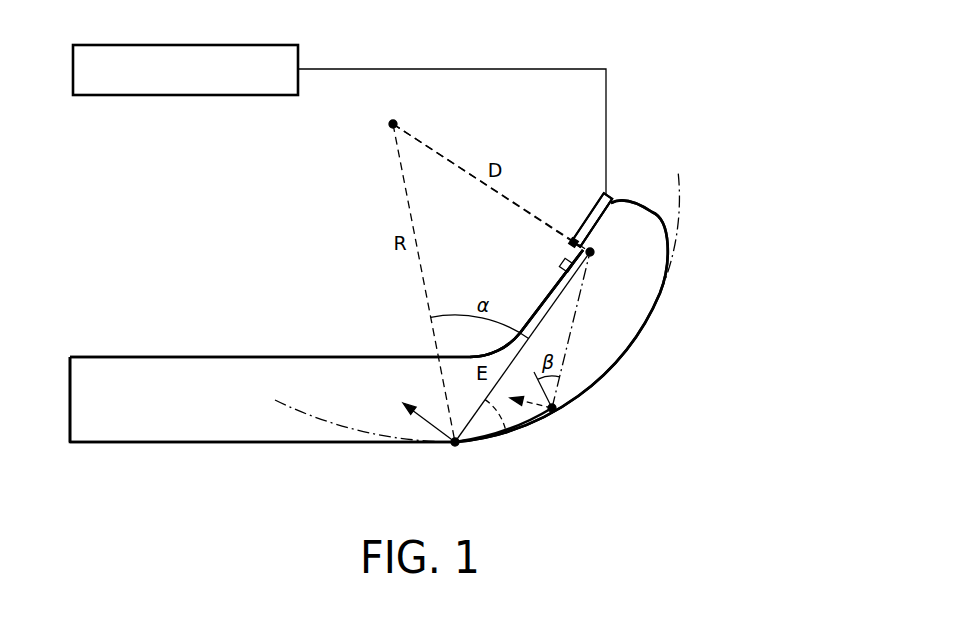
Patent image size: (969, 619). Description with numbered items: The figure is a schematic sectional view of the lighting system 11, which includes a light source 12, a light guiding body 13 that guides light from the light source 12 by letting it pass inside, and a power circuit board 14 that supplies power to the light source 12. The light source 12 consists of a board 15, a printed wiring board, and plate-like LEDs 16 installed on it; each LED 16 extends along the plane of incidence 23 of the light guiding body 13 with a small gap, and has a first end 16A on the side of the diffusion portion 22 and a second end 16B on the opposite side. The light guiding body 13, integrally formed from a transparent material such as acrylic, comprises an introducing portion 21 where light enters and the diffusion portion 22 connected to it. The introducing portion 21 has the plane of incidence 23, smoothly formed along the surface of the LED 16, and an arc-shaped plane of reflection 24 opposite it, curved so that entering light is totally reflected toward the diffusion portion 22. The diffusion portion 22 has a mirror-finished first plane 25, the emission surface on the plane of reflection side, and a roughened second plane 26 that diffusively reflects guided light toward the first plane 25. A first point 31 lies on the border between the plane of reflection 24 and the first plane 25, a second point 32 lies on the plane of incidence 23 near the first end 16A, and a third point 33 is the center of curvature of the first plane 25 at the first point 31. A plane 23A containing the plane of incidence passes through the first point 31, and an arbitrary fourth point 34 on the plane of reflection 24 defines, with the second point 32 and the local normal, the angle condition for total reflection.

The lighting system 11 is at (707, 57).
The light source 12 is at (650, 173).
The light guiding body 13 is at (357, 332).
The power circuit board 14 is at (212, 96).
The board 15 is at (592, 220).
The LED 16 is at (607, 190).
The first end 16A is at (573, 237).
The second end 16B is at (612, 198).
The introducing portion 21 is at (633, 304).
The diffusion portion 22 is at (197, 377).
The plane of incidence 23 is at (543, 300).
The plane containing the plane of incidence 23A is at (508, 432).
The plane of reflection 24 is at (632, 358).
The first plane 25 is at (260, 443).
The second plane 26 is at (270, 357).
The first point 31 is at (455, 447).
The second point 32 is at (598, 252).
The third point 33 is at (389, 124).
The fourth point 34 is at (555, 412).